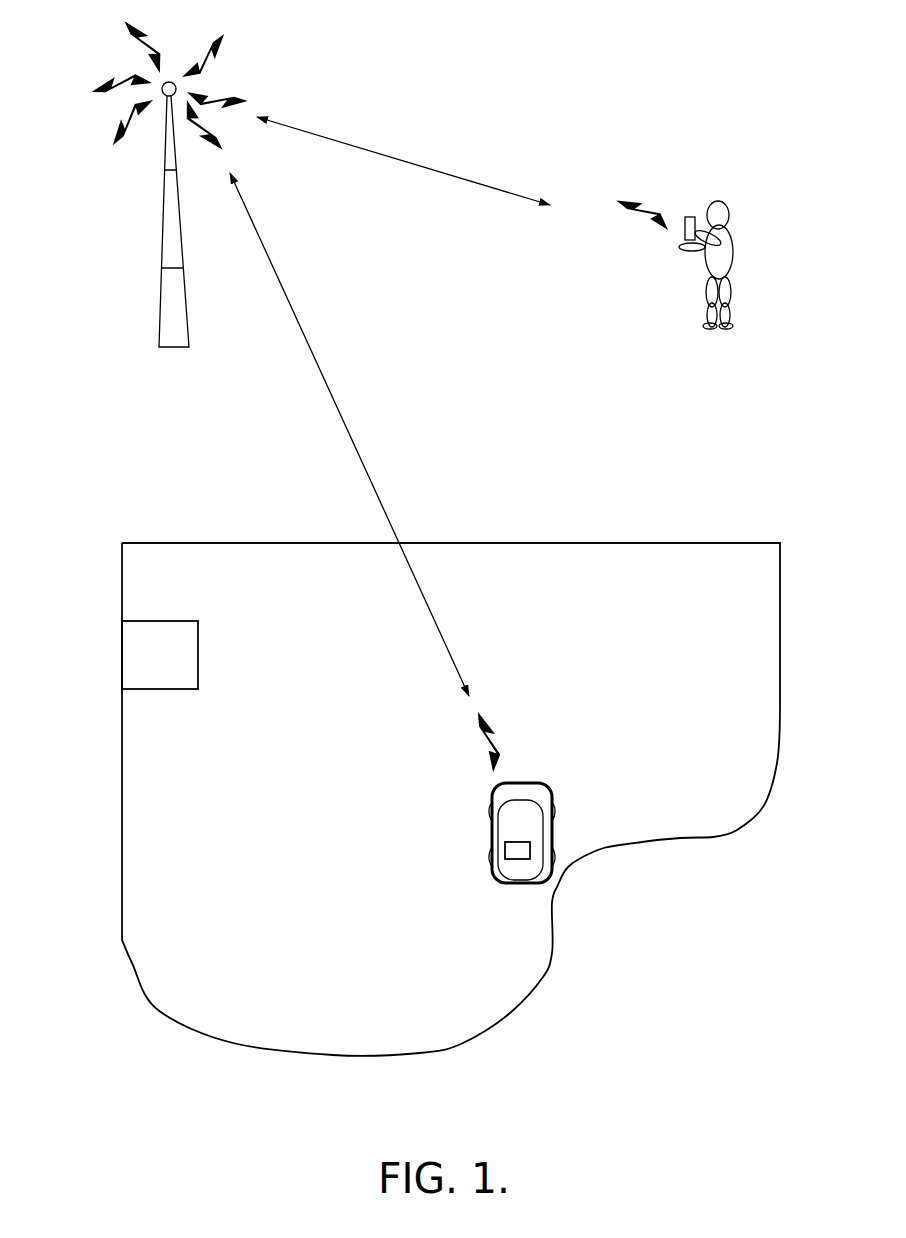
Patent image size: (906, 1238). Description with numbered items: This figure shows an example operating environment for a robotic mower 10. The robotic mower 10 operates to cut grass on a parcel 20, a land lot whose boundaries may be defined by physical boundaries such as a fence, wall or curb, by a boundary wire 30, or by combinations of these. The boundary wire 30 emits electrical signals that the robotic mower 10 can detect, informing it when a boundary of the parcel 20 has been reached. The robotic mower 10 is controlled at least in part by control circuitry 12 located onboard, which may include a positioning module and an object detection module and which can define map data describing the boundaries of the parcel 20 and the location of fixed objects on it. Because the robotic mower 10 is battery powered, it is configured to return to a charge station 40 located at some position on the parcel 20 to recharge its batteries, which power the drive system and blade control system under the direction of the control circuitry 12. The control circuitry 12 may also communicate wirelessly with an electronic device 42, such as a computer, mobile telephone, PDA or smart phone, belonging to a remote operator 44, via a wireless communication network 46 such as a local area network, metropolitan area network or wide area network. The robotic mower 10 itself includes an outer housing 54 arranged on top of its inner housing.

The robotic mower 10 is at (550, 820).
The control circuitry 12 is at (522, 842).
The parcel 20 is at (335, 869).
The boundary wire 30 is at (552, 965).
The charge station 40 is at (147, 652).
The electronic device 42 is at (692, 207).
The remote operator 44 is at (755, 206).
The wireless communication network 46 is at (298, 303).
The outer housing 54 is at (517, 783).